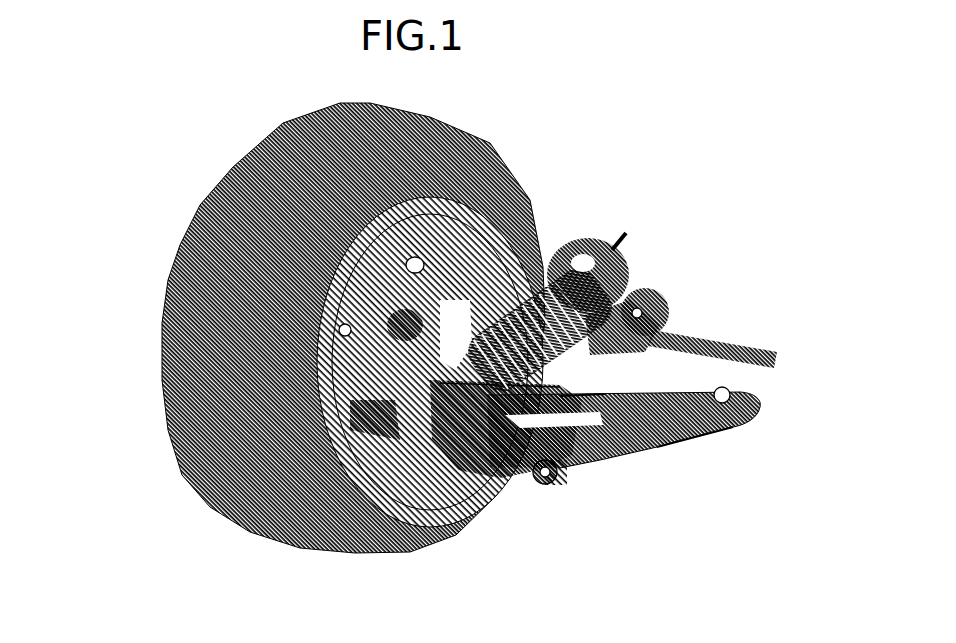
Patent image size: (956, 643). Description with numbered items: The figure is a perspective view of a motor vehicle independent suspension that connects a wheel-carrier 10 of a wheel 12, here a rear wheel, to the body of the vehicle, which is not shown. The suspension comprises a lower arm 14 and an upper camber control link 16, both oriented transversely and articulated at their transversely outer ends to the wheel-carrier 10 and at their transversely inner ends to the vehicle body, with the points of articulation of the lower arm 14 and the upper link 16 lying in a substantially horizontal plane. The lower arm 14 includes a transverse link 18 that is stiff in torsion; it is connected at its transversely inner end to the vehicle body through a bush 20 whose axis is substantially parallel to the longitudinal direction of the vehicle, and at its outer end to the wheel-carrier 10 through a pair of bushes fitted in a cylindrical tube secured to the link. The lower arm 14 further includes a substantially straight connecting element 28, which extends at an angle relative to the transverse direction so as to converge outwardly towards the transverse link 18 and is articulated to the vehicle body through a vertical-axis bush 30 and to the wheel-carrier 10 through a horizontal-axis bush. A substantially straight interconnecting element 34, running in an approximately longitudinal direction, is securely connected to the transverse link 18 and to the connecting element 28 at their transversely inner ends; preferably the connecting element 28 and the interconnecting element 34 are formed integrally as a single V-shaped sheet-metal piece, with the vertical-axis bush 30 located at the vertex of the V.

The wheel-carrier 10 is at (337, 395).
The wheel 12 is at (325, 528).
The lower arm 14 is at (661, 453).
The upper camber control link 16 is at (631, 348).
The transverse link 18 is at (491, 463).
The bush 20 is at (563, 473).
The connecting element 28 is at (580, 395).
The vertical-axis bush 30 is at (724, 391).
The interconnecting element 34 is at (692, 432).